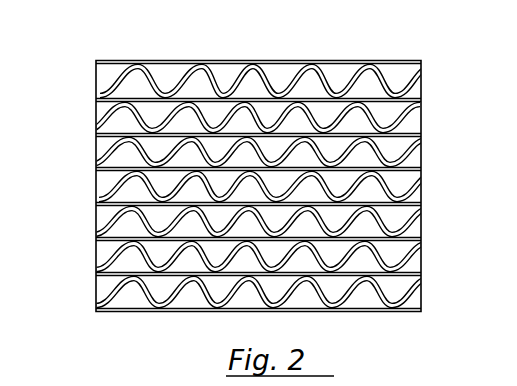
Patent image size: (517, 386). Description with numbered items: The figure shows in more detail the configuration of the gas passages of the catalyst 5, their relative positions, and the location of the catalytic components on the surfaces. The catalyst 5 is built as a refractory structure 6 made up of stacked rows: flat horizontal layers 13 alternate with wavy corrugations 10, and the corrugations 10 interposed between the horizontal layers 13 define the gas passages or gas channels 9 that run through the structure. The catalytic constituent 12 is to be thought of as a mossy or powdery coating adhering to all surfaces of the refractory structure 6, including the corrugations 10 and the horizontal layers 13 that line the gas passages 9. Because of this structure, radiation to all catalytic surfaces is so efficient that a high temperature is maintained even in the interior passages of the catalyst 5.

The catalyst 5 is at (414, 50).
The refractory structure 6 is at (268, 93).
The gas passages 9 is at (186, 120).
The corrugations 10 is at (378, 160).
The catalytic constituent 12 is at (145, 160).
The horizontal layer 13 is at (97, 241).